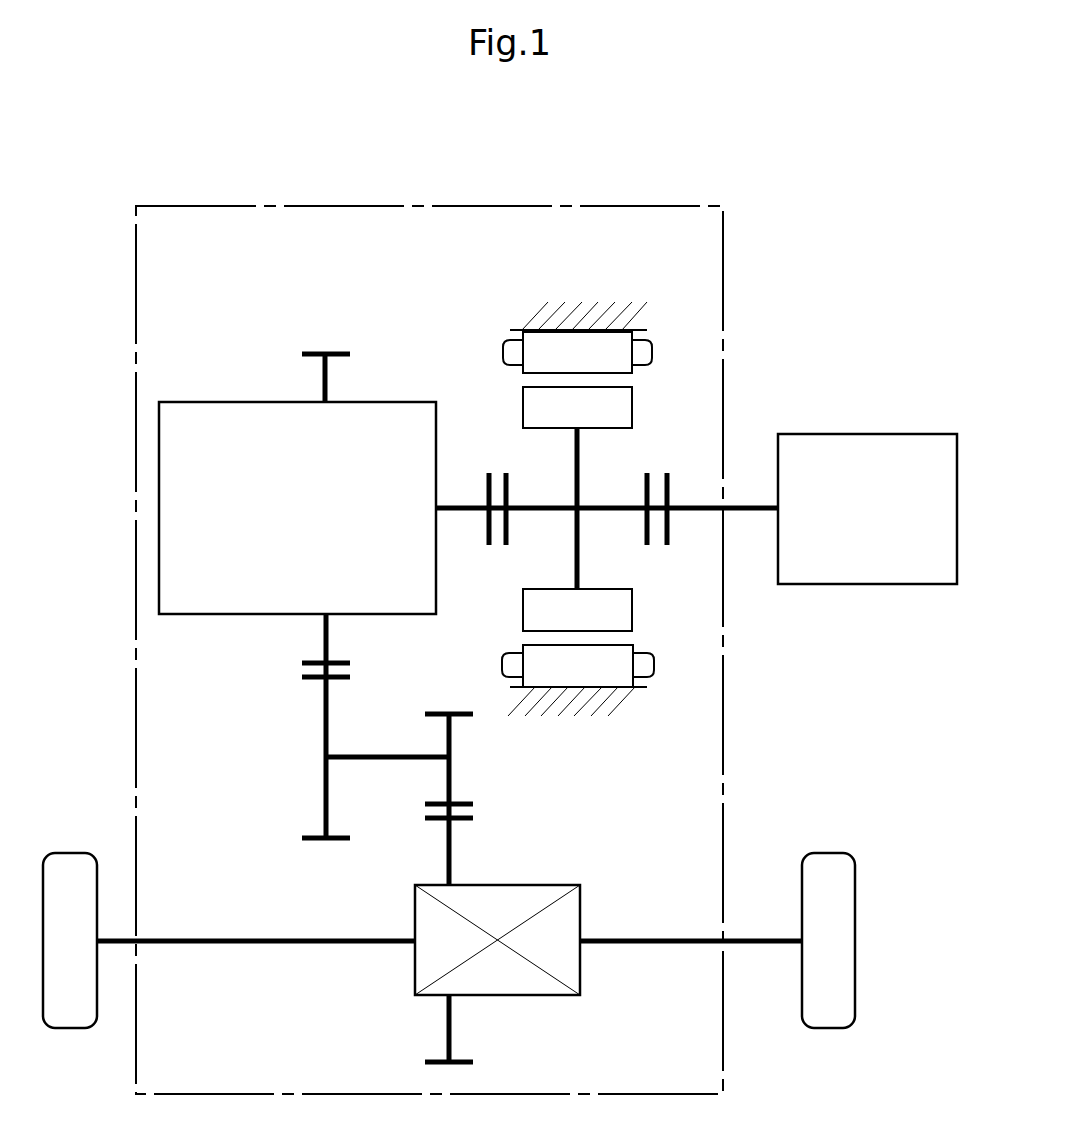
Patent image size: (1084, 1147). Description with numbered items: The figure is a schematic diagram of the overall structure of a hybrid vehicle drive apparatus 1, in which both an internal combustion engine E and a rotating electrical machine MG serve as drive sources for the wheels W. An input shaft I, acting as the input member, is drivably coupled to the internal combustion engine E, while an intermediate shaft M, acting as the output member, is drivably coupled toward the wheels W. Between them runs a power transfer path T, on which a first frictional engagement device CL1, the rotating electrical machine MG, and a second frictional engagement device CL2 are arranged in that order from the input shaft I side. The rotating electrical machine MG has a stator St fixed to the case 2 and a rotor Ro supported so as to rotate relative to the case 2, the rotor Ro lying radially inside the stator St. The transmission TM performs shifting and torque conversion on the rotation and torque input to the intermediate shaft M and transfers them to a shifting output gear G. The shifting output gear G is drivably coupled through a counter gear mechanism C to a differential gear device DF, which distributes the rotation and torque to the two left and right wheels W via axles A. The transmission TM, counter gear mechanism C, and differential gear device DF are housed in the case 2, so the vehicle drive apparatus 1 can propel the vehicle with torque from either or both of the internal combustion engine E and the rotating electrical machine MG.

The vehicle drive apparatus 1 is at (173, 148).
The case 2 is at (375, 206).
The transmission TM is at (204, 402).
The shifting output gear G is at (337, 353).
The intermediate shaft M is at (445, 505).
The second frictional engagement device CL2 is at (496, 463).
The power transfer path T is at (692, 536).
The rotating electrical machine MG is at (578, 431).
The stator St is at (578, 509).
The rotor Ro is at (577, 509).
The first frictional engagement device CL1 is at (667, 463).
The input shaft I is at (733, 505).
The internal combustion engine E is at (882, 434).
The counter gear mechanism C is at (293, 727).
The differential gear device DF is at (515, 997).
The axles A is at (193, 938).
The wheels W is at (75, 855).